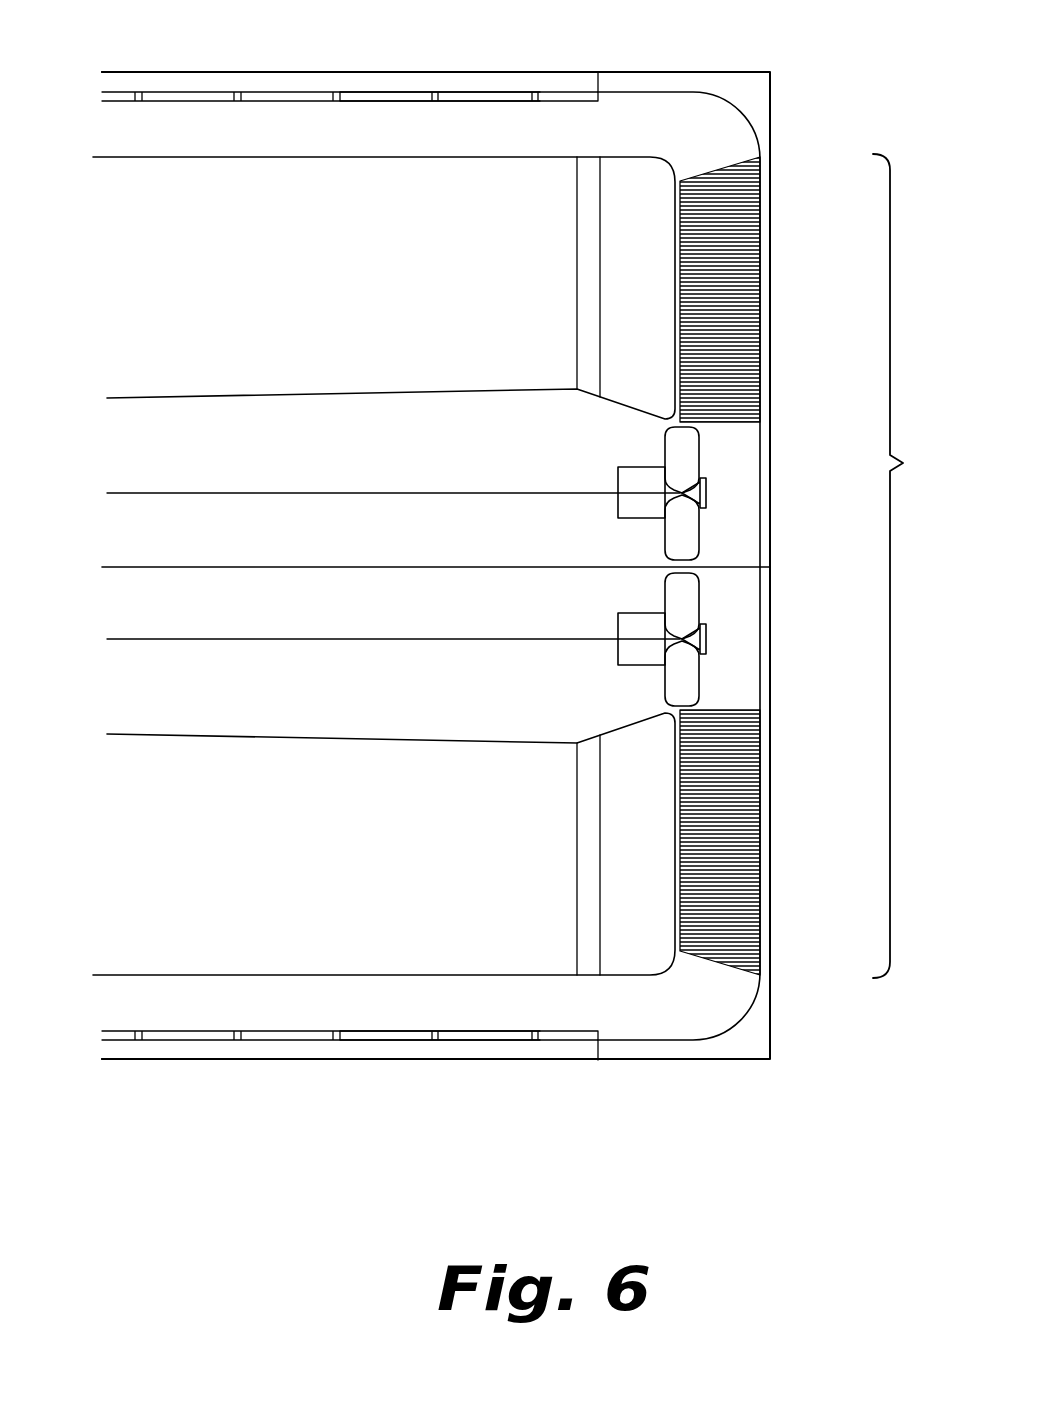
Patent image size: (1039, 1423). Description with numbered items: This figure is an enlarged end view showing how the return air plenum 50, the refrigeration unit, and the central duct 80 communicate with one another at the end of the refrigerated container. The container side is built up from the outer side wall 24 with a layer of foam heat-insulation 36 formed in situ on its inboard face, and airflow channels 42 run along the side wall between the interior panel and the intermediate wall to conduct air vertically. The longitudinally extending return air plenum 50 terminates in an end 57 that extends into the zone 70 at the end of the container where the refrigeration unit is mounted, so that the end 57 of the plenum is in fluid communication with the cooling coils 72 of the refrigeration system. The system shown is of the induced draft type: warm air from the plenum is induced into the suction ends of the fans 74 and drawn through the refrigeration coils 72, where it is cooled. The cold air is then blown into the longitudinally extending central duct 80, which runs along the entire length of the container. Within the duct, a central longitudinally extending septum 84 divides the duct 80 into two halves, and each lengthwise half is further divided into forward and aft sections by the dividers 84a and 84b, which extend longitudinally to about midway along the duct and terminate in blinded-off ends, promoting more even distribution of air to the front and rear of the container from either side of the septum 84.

The outer side wall 24 is at (512, 72).
The foam heat-insulation layer 36 is at (178, 85).
The airflow channels 42 is at (405, 100).
The return air plenum 50 is at (298, 130).
The plenum end 57 is at (680, 133).
The refrigeration zone 70 is at (908, 566).
The cooling coils 72 is at (750, 272).
The fans 74 is at (705, 492).
The central duct 80 is at (393, 393).
The central septum 84 is at (130, 567).
The divider 84a is at (250, 493).
The divider 84b is at (250, 639).